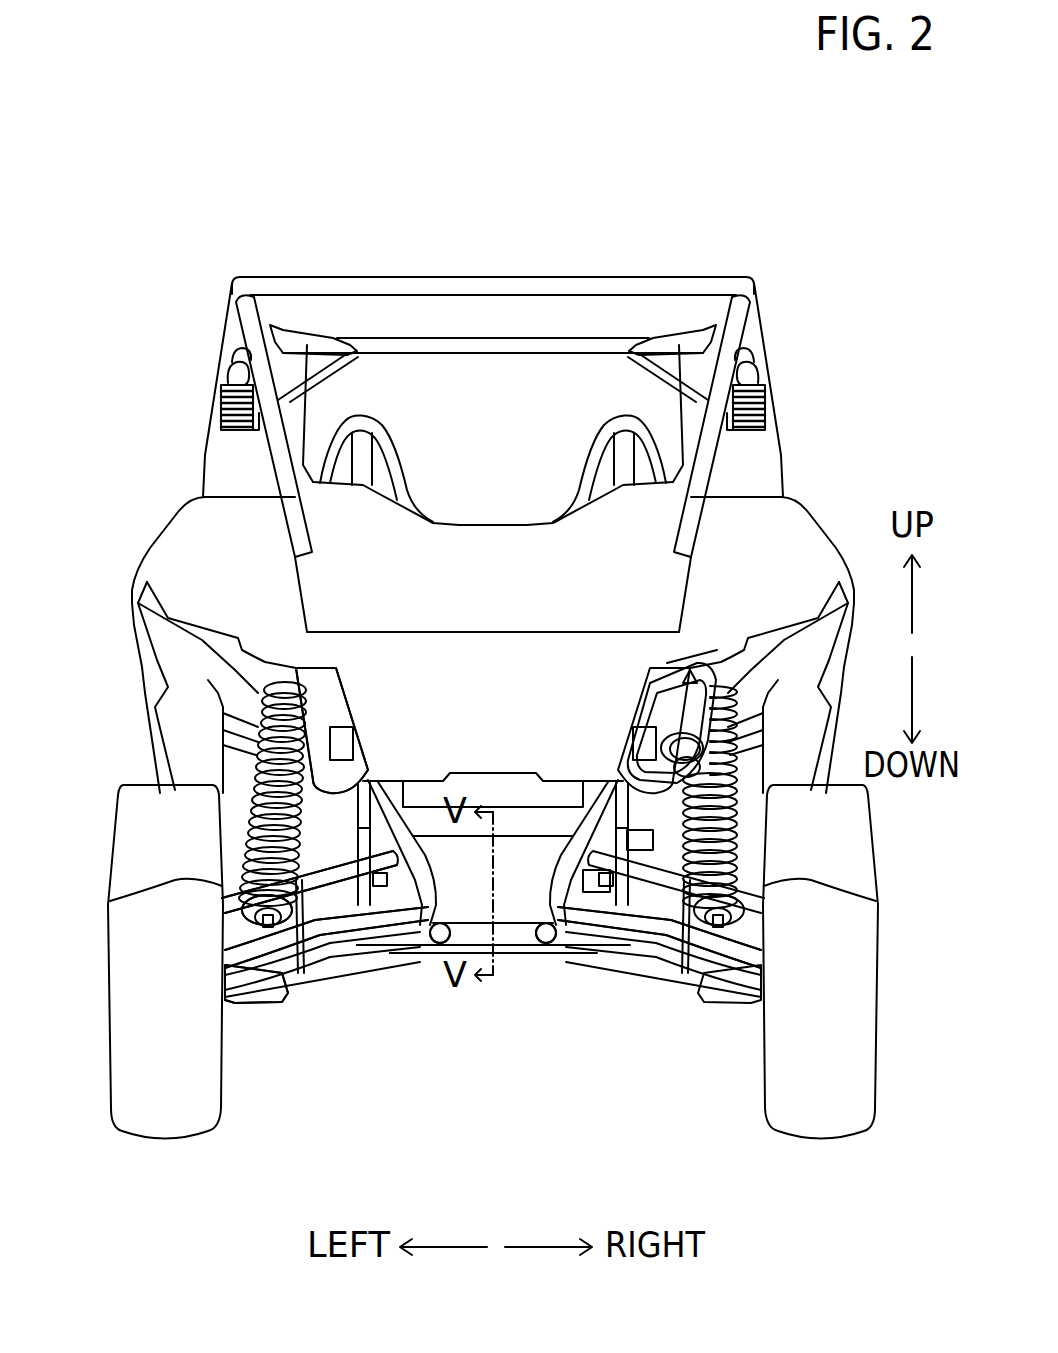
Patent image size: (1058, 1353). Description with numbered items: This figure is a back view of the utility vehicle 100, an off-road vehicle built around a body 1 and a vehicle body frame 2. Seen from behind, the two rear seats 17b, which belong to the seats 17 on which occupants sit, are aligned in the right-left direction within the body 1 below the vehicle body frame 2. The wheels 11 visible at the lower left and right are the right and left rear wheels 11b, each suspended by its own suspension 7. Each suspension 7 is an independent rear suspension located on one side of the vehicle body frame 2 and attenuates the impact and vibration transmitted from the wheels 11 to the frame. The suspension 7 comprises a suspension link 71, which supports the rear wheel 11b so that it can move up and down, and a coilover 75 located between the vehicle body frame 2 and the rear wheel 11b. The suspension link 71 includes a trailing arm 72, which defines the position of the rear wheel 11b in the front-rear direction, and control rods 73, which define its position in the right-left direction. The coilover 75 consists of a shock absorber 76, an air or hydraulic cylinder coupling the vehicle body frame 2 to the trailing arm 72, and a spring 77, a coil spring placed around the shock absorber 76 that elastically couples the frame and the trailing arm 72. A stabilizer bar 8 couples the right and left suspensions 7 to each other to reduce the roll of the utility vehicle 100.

The utility vehicle 100 is at (182, 238).
The body 1 is at (185, 503).
The vehicle body frame 2 is at (600, 276).
The seats 17 is at (398, 452).
The rear seats 17b is at (583, 483).
The suspension 7 is at (255, 700).
The coilover 75 is at (250, 768).
The spring 77 is at (247, 800).
The suspension link 71 is at (110, 901).
The trailing arm 72 is at (267, 1003).
The control rods 73 is at (410, 940).
The shock absorber 76 is at (278, 950).
The stabilizer bar 8 is at (357, 947).
The wheels 11 is at (220, 1088).
The rear wheels 11b is at (220, 1110).